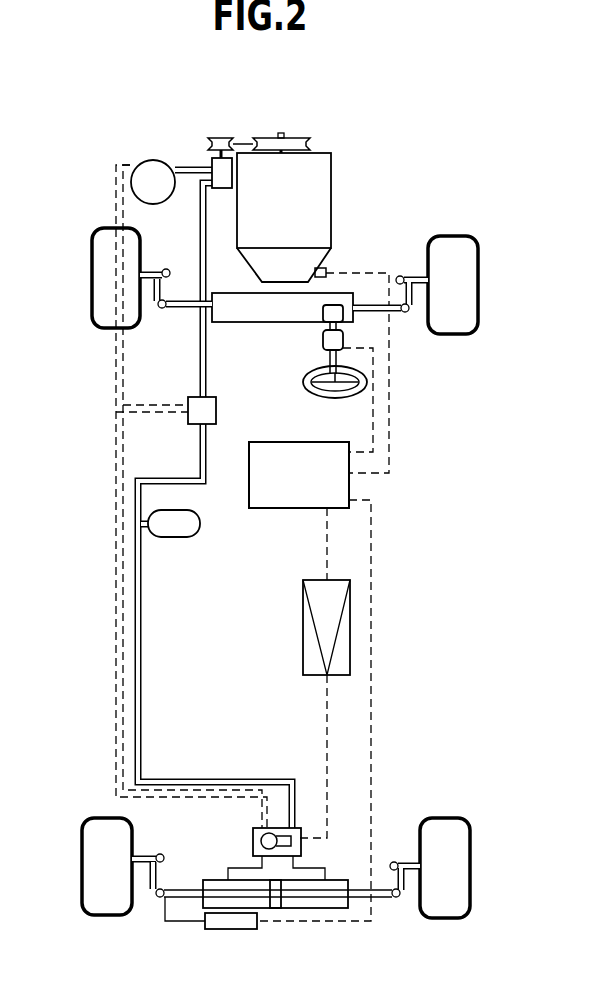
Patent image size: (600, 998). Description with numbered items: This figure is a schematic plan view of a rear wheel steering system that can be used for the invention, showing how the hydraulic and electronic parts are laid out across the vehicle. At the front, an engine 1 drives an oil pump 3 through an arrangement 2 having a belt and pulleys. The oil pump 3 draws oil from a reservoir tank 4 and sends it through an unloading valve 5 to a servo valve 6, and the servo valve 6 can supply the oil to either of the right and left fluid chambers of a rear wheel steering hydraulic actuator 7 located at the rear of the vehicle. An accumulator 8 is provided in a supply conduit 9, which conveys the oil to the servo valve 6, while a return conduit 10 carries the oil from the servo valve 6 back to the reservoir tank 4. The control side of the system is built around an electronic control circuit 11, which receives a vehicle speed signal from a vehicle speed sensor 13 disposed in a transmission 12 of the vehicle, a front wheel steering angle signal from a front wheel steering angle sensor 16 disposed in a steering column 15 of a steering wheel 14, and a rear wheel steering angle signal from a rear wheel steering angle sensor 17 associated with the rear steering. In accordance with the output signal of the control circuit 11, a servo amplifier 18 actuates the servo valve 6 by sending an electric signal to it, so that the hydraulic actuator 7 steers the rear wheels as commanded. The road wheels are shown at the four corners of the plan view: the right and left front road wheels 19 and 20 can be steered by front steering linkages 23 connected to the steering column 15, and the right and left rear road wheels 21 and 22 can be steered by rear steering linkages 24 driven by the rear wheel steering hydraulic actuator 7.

The engine 1 is at (333, 163).
The arrangement 2 is at (244, 143).
The oil pump 3 is at (212, 160).
The reservoir tank 4 is at (137, 168).
The unloading valve 5 is at (217, 412).
The servo valve 6 is at (253, 842).
The rear wheel steering hydraulic actuator 7 is at (305, 908).
The accumulator 8 is at (200, 527).
The supply conduit 9 is at (141, 660).
The return conduit 10 is at (112, 632).
The electronic control circuit 11 is at (261, 509).
The transmission 12 is at (324, 258).
The vehicle speed sensor 13 is at (327, 272).
The steering wheel 14 is at (315, 390).
The steering column 15 is at (330, 366).
The front wheel steering angle sensor 16 is at (323, 346).
The rear wheel steering angle sensor 17 is at (243, 930).
The servo amplifier 18 is at (303, 657).
The right front road wheel 19 is at (478, 324).
The left front road wheel 20 is at (92, 320).
The right rear road wheel 21 is at (470, 842).
The left rear road wheel 22 is at (82, 840).
The front steering linkages 23 is at (405, 314).
The rear steering linkages 24 is at (394, 862).